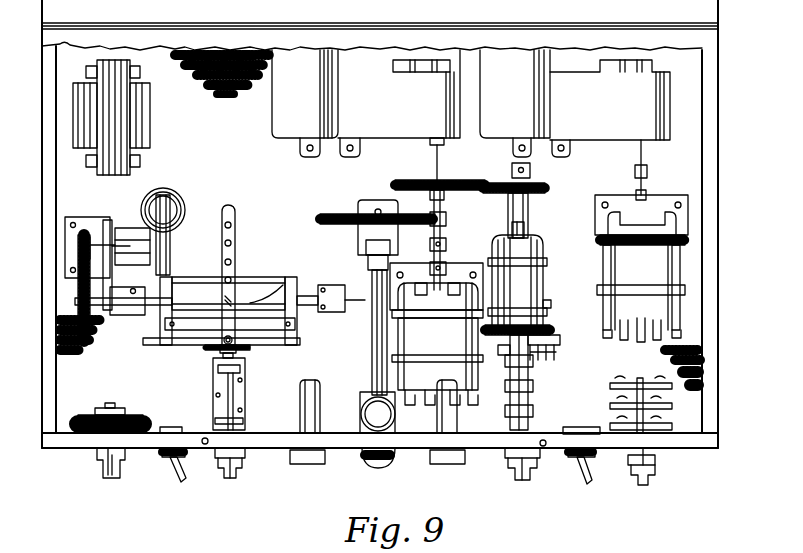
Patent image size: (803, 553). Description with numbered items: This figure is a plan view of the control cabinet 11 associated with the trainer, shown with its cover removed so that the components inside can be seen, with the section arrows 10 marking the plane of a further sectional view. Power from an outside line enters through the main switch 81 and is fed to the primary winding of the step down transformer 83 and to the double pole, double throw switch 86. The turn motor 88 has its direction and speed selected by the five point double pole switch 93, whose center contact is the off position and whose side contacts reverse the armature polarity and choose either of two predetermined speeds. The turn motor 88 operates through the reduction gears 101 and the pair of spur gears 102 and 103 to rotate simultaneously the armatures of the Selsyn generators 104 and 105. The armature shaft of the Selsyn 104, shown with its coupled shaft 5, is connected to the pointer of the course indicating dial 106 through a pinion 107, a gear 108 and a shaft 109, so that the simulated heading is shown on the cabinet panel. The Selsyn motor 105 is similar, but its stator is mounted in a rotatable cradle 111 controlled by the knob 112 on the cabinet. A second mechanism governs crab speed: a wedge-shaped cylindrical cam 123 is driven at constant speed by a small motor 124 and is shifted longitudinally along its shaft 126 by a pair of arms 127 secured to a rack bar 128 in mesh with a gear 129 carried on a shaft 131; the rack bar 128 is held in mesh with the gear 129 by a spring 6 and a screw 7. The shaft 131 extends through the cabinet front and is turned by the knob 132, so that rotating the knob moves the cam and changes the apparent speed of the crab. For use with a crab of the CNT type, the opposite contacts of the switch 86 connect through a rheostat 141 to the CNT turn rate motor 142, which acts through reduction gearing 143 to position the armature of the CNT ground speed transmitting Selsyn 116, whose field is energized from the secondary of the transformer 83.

The shaft 5 is at (440, 282).
The spring 6 is at (200, 278).
The screw 7 is at (222, 350).
The section line 10 is at (313, 195).
The control cabinet 11 is at (52, 458).
The main switch 81 is at (597, 482).
The step down transformer 83 is at (150, 118).
The double pole, double throw switch 86 is at (178, 480).
The turn motor 88 is at (302, 102).
The five point double pole switch 93 is at (612, 393).
The reduction gears 101 is at (432, 105).
The spur gear 102 is at (405, 180).
The spur gear 103 is at (548, 183).
The Selsyn generator 104 is at (439, 348).
The Selsyn motor 105 is at (544, 300).
The course indicating dial 106 is at (398, 458).
The pinion 107 is at (446, 219).
The gear 108 is at (345, 225).
The shaft 109 is at (373, 360).
The rotatable cradle 111 is at (552, 308).
The knob 112 is at (522, 482).
The CNT ground speed transmitting Selsyn 116 is at (656, 275).
The wedge-shaped cylindrical cam 123 is at (268, 292).
The small motor 124 is at (135, 230).
The shaft 126 is at (158, 306).
The arms 127 is at (297, 315).
The rack bar 128 is at (205, 345).
The gear 129 is at (245, 352).
The shaft 131 is at (245, 410).
The knob 132 is at (242, 478).
The rheostat 141 is at (100, 480).
The CNT turn rate motor 142 is at (517, 95).
The reduction gearing 143 is at (648, 105).